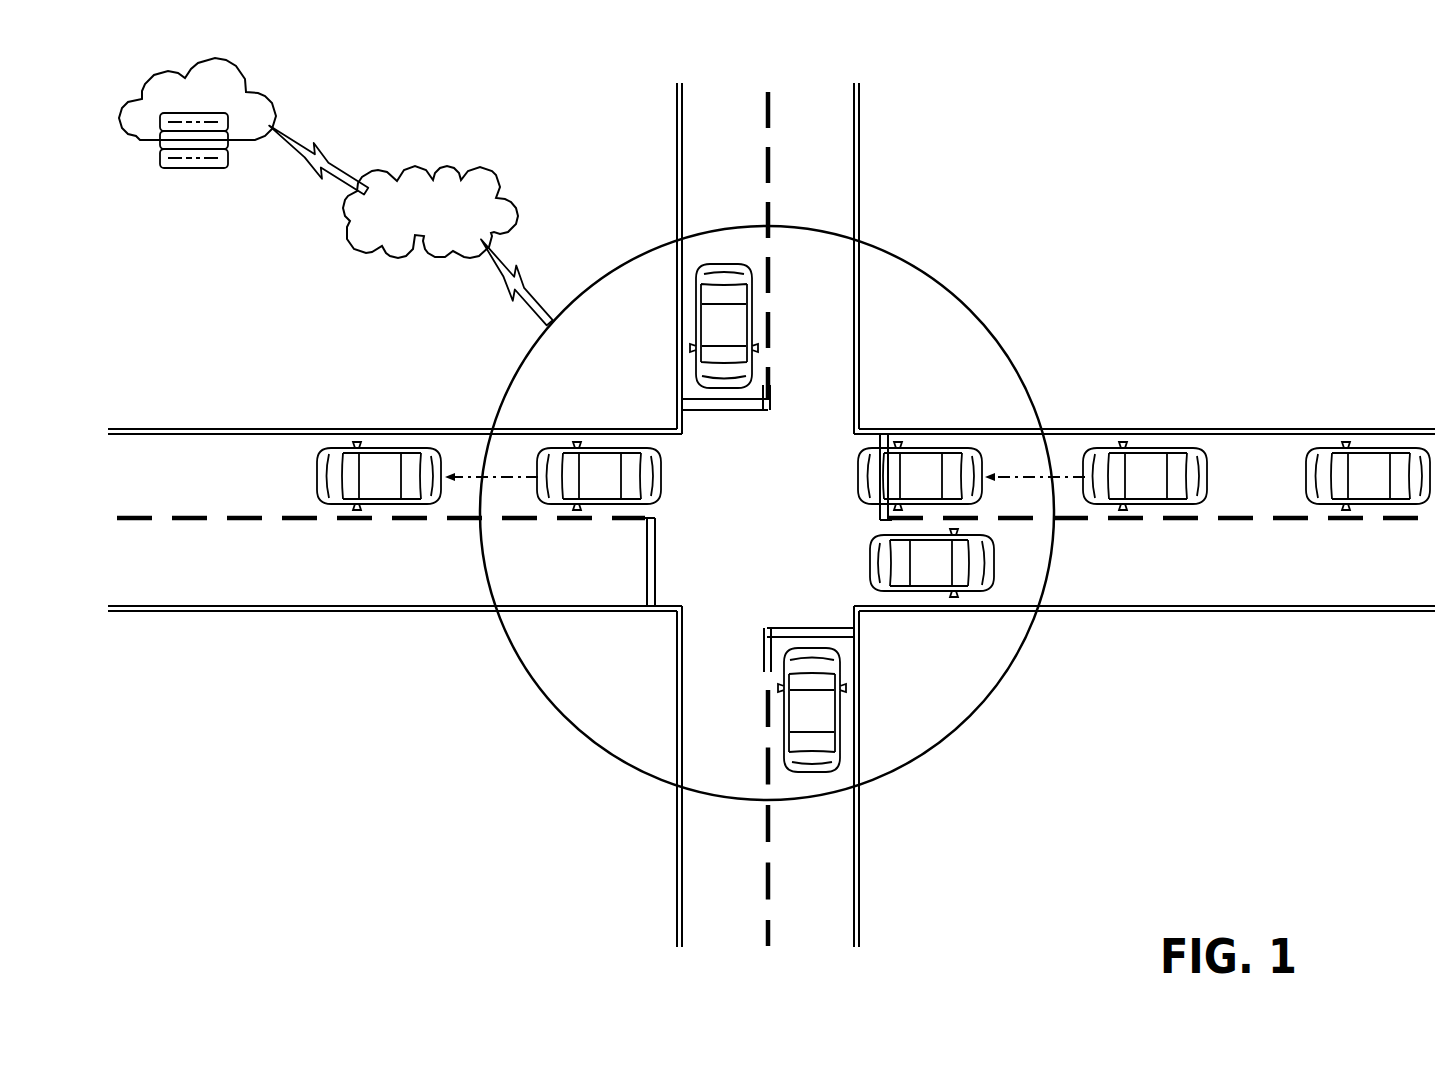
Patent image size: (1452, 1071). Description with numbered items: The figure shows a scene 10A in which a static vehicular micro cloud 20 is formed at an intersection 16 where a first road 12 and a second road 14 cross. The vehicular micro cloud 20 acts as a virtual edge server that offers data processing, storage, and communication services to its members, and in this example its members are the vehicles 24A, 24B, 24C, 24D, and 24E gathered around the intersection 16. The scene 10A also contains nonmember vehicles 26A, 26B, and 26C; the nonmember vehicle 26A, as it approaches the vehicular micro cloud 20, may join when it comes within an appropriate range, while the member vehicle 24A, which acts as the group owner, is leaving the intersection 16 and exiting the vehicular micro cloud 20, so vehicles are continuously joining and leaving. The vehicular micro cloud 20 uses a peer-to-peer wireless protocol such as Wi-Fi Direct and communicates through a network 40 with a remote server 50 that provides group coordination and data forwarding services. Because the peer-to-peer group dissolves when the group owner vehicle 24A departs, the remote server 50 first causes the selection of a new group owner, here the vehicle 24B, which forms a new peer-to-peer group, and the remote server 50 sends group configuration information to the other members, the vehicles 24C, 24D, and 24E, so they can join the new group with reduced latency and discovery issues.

The scene 10A is at (1165, 196).
The first road 12 is at (820, 163).
The second road 14 is at (1264, 576).
The intersection 16 is at (752, 500).
The vehicular micro cloud 20 is at (922, 270).
The vehicle 24A is at (553, 490).
The vehicle 24B is at (721, 300).
The vehicle 24C is at (935, 472).
The vehicle 24D is at (975, 570).
The vehicle 24E is at (820, 733).
The nonmember vehicle 26A is at (1167, 470).
The nonmember vehicle 26B is at (389, 470).
The non-connected vehicle 26C is at (1368, 470).
The network 40 is at (440, 172).
The remote server 50 is at (257, 108).